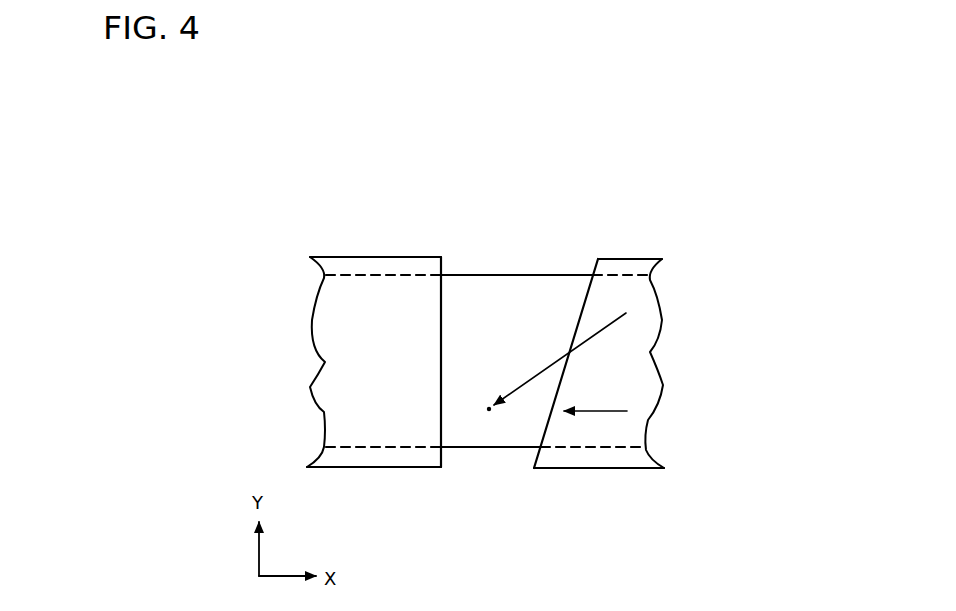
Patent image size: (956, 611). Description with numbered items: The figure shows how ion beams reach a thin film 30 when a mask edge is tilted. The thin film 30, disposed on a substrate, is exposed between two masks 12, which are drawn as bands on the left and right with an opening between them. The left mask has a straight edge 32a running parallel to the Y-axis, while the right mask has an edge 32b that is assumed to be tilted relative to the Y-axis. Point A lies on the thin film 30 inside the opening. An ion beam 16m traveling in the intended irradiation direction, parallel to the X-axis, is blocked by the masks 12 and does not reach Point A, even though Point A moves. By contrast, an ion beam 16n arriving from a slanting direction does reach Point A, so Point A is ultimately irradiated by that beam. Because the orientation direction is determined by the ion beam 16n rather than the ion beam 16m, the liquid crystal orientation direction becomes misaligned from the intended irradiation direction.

The mask 12 is at (408, 260).
The thin film 30 is at (473, 287).
The edge 32a is at (437, 258).
The edge 32b is at (606, 258).
The ion beam 16n is at (600, 332).
The ion beam 16m is at (627, 411).